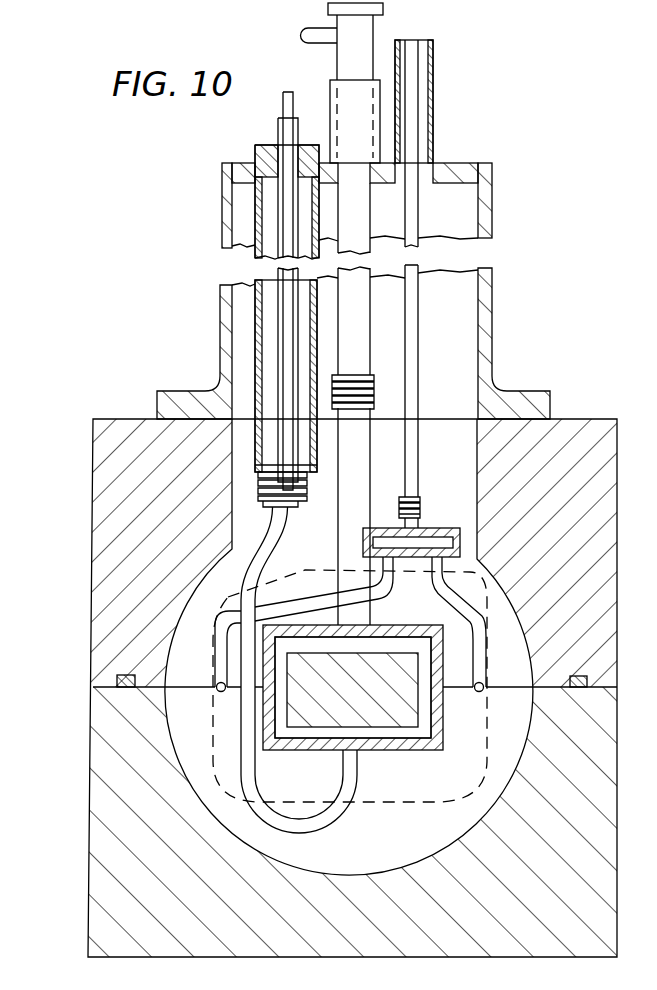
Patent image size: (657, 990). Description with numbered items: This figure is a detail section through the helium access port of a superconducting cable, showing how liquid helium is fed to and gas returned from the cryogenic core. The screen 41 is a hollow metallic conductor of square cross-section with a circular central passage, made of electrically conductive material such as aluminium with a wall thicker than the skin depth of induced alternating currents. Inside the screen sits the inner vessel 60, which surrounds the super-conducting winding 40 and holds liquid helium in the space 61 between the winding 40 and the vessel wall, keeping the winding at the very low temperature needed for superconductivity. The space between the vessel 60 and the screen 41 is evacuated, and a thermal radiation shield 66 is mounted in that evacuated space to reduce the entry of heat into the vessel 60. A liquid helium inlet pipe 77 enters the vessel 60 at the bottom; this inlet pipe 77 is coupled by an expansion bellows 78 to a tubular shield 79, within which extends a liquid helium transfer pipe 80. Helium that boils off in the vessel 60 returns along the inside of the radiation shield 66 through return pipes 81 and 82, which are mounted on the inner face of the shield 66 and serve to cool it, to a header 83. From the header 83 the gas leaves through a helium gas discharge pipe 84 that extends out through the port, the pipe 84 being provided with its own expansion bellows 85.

The super-conducting winding 40 is at (408, 707).
The screen 41 is at (108, 858).
The inner vessel 60 is at (408, 752).
The space 61 is at (335, 733).
The thermal radiation shield 66 is at (398, 805).
The liquid helium inlet pipe 77 is at (332, 825).
The expansion bellows 78 is at (268, 495).
The tubular shield 79 is at (255, 316).
The liquid helium transfer pipe 80 is at (285, 210).
The return pipe 81 is at (217, 700).
The return pipe 82 is at (484, 681).
The header 83 is at (422, 543).
The helium gas discharge pipe 84 is at (417, 360).
The expansion bellows 85 is at (416, 498).